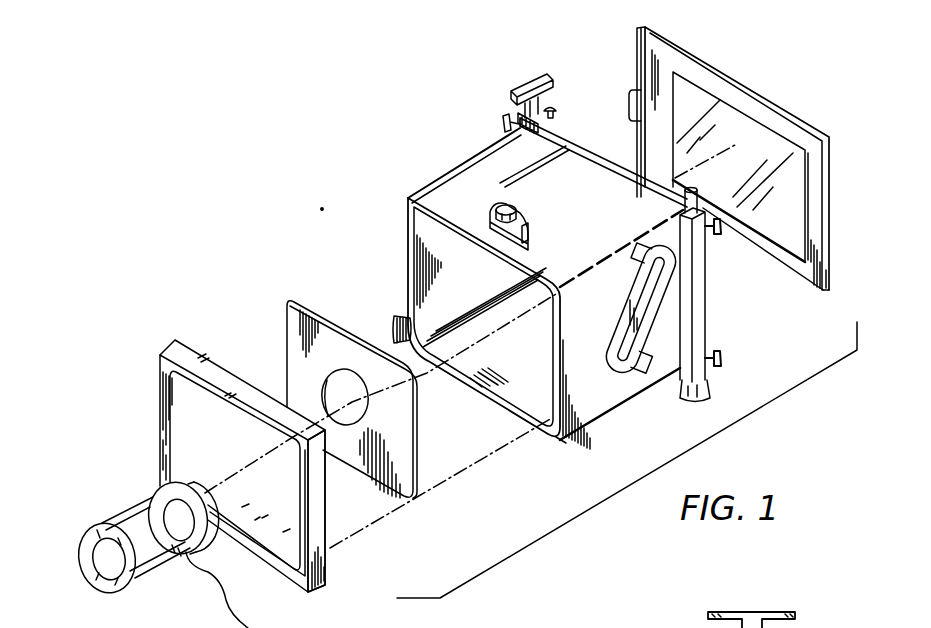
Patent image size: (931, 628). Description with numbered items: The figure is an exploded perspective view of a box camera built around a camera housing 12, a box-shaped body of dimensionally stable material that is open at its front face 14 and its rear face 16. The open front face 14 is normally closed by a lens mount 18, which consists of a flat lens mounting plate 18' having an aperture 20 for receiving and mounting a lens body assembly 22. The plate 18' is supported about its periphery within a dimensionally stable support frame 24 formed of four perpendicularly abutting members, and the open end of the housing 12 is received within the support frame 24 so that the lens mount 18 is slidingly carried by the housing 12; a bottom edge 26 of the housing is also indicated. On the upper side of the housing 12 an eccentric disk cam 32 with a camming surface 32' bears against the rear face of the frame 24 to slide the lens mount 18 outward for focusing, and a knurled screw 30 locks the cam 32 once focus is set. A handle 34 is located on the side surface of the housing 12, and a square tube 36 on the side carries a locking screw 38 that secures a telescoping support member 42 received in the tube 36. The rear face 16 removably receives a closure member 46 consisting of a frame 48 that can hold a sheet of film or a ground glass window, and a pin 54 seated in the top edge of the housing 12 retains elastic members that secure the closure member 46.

The camera housing 12 is at (586, 259).
The front face 14 is at (440, 281).
The rear face 16 is at (626, 166).
The lens mount 18 is at (234, 434).
The lens mounting plate 18' is at (376, 399).
The aperture 20 is at (356, 393).
The lens body assembly 22 is at (152, 562).
The support frame 24 is at (322, 530).
The housing bottom edge 26 is at (566, 441).
The knurled screw 30 is at (508, 205).
The eccentric disk cam 32 is at (494, 211).
The camming surface 32' is at (561, 218).
The handle 34 is at (641, 367).
The square tube 36 is at (522, 114).
The locking screw 38 is at (724, 358).
The support member 42 is at (708, 616).
The closure member 46 is at (634, 92).
The frame 48 is at (800, 134).
The pin 54 is at (555, 110).